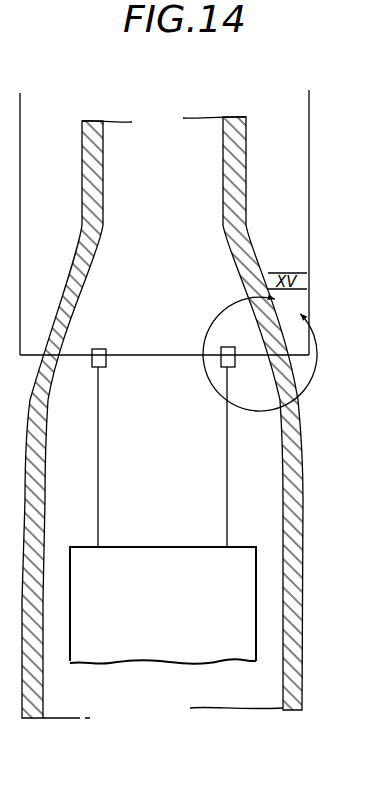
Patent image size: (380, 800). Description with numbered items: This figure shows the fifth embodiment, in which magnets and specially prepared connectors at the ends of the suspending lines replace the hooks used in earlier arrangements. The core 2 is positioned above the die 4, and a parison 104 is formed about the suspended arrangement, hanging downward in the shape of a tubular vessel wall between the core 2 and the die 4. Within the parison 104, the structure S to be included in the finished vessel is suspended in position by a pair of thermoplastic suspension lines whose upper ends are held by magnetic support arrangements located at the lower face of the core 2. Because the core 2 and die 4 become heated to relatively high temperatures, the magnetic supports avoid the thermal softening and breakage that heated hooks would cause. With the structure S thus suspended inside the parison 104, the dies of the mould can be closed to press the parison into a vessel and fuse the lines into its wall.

The core 2 is at (193, 417).
The die 4 is at (300, 190).
The parison 104 is at (302, 600).
The structure S is at (237, 628).